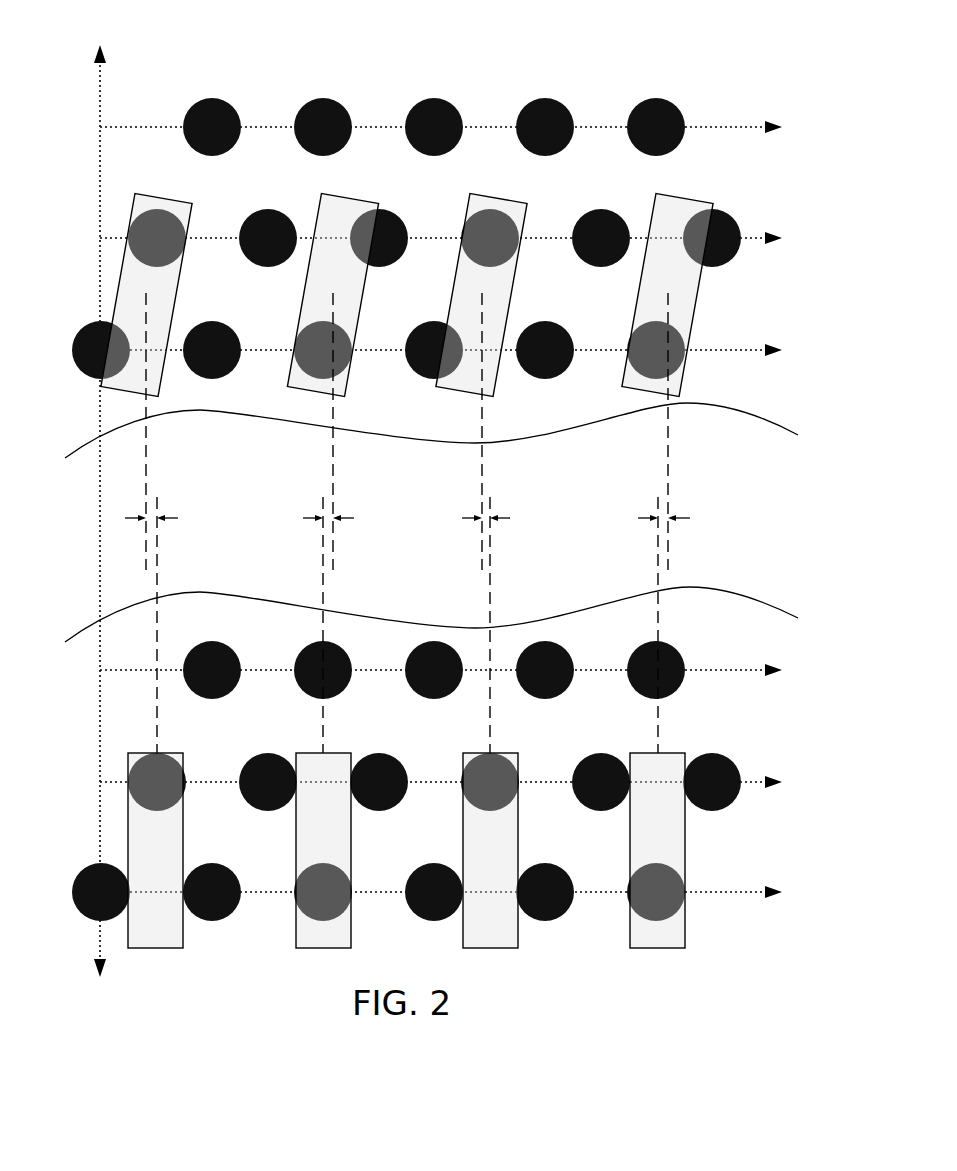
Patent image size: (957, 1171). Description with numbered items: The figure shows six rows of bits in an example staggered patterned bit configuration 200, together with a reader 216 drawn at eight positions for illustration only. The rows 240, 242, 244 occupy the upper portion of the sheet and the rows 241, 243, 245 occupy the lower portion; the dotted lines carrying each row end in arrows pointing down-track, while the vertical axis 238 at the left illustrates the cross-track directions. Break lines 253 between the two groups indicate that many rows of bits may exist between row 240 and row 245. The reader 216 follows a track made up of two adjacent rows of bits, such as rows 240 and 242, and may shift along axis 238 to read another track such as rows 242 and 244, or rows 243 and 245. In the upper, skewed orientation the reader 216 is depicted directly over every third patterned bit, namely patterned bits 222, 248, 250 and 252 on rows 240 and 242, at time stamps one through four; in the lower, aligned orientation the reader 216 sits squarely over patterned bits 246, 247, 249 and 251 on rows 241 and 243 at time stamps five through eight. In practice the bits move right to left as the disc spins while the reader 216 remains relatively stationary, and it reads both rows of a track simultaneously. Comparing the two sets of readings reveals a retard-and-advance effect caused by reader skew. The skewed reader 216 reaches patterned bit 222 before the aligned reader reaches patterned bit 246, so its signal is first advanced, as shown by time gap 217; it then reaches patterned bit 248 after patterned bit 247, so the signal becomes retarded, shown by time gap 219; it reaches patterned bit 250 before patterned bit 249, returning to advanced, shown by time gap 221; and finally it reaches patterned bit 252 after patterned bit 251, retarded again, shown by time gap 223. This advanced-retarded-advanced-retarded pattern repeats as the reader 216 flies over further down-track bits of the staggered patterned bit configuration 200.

The staggered patterned bit configuration 200 is at (128, 48).
The reader 216 is at (157, 196).
The time gap 217 is at (151, 521).
The time gap 219 is at (328, 521).
The time gap 221 is at (486, 521).
The patterned bit 222 is at (143, 212).
The time gap 223 is at (663, 521).
The axis 238 is at (100, 110).
The row of bits 240 is at (437, 368).
The row of bits 241 is at (445, 922).
The row of bits 242 is at (435, 247).
The row of bits 243 is at (438, 793).
The row of bits 244 is at (754, 127).
The row of bits 245 is at (718, 668).
The patterned bit 246 is at (137, 767).
The patterned bit 247 is at (335, 915).
The patterned bit 248 is at (332, 375).
The patterned bit 249 is at (505, 803).
The patterned bit 250 is at (497, 263).
The patterned bit 251 is at (645, 918).
The patterned bit 252 is at (632, 372).
The break lines 253 is at (688, 404).